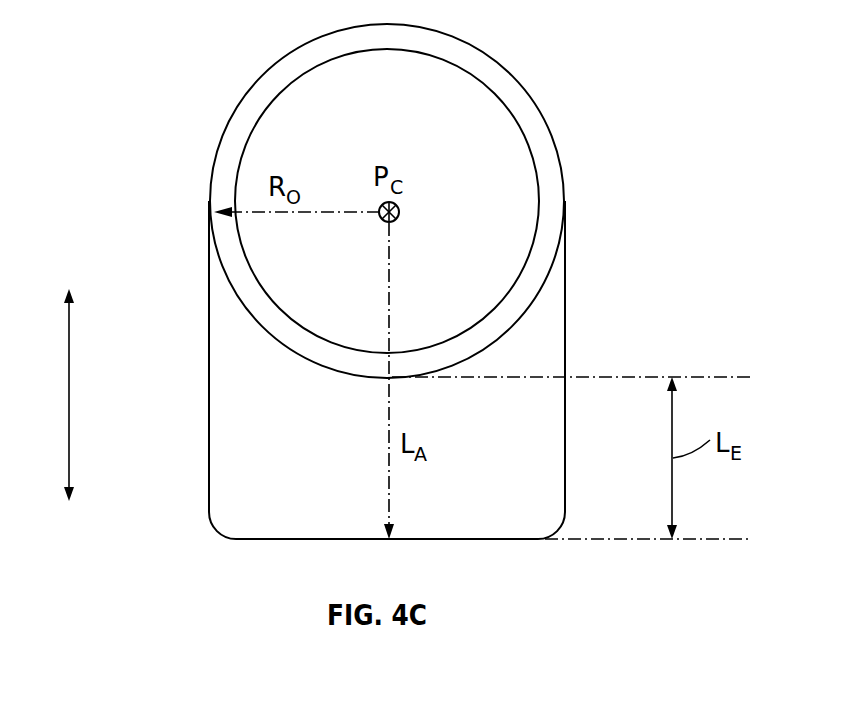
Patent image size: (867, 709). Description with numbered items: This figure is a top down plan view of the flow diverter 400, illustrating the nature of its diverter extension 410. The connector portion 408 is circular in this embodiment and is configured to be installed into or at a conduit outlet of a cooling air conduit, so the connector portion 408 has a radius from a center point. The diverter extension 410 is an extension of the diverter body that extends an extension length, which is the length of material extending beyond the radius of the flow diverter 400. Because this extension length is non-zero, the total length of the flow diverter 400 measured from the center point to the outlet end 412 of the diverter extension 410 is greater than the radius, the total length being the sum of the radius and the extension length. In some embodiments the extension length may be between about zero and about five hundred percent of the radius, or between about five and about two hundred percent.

The flow diverter 400 is at (146, 118).
The connector portion 408 is at (543, 127).
The diverter extension 410 is at (218, 470).
The outlet end 412 is at (466, 541).